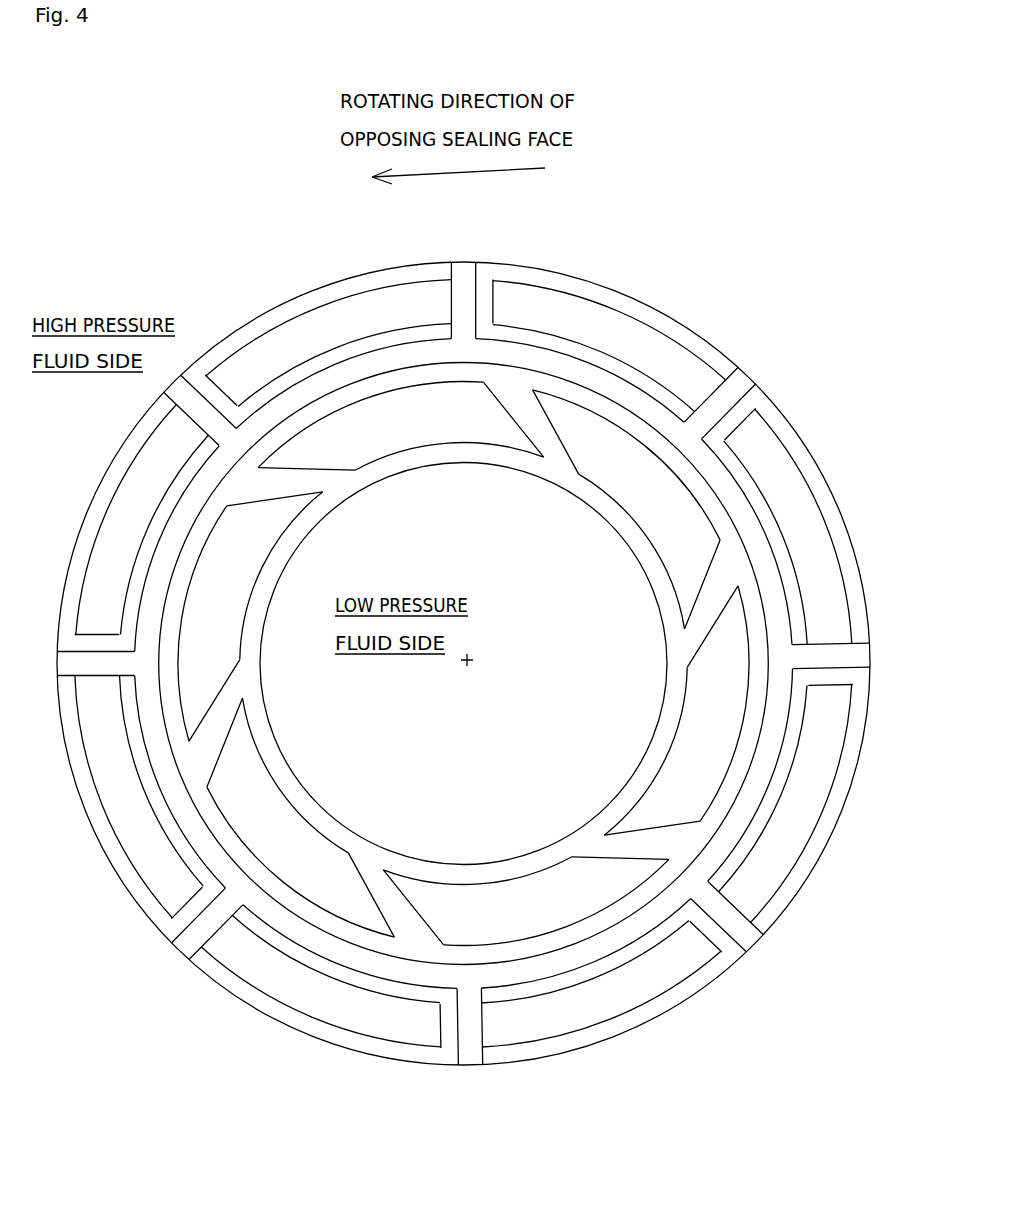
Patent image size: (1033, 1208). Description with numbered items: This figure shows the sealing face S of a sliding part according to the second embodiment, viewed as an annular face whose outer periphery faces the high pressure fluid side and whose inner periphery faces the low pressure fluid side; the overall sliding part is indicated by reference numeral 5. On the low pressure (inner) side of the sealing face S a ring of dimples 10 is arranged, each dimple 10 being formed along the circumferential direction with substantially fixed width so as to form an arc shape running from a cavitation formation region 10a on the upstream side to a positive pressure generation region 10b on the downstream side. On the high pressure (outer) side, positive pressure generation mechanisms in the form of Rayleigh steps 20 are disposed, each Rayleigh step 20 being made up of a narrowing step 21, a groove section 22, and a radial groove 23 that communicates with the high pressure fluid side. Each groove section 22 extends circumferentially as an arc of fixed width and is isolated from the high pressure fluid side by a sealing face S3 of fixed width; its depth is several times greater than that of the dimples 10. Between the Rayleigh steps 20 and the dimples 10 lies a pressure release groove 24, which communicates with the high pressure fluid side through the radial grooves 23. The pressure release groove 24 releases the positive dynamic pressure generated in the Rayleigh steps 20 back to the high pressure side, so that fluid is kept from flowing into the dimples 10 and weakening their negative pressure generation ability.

The sealing face 5 is at (362, 272).
The Rayleigh step 20 is at (464, 609).
The narrowing step 21 is at (222, 362).
The groove section 22 is at (407, 305).
The radial groove 23 is at (485, 292).
The pressure release groove 24 is at (613, 307).
The sealing face S is at (705, 505).
The sealing face S3 is at (215, 340).
The dimple 10 is at (463, 664).
The cavitation formation region 10a is at (495, 447).
The positive pressure generation region 10b is at (306, 452).